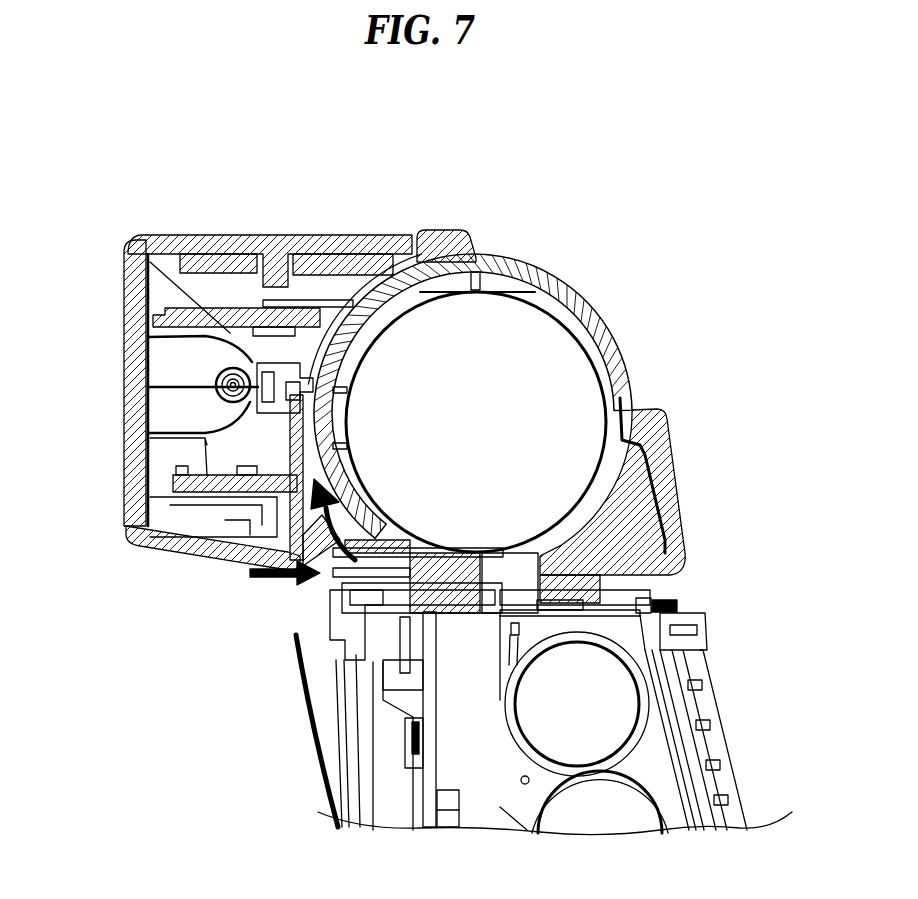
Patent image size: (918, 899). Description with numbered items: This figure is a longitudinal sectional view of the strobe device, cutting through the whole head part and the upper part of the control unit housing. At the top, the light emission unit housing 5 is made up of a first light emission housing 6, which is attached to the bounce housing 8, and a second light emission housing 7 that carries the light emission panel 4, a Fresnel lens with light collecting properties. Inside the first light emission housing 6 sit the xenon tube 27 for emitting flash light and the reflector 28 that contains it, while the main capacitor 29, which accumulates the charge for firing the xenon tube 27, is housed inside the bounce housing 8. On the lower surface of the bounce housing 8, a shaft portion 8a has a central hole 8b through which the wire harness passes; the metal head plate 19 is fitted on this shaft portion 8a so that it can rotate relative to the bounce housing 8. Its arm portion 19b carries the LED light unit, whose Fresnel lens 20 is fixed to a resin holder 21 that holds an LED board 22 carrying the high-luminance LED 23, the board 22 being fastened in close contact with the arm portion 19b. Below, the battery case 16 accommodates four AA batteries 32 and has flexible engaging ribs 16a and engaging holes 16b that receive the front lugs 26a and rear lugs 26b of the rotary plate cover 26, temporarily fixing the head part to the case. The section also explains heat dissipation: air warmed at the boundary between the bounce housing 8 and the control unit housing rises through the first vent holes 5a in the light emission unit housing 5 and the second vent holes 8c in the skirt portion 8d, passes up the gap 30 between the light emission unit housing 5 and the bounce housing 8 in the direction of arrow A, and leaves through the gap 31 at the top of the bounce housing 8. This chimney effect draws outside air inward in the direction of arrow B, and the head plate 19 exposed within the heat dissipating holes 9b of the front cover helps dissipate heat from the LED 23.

The light emission panel 4 is at (137, 292).
The light emission unit housing 5 is at (284, 237).
The first vent holes 5a is at (305, 442).
The first light emission housing 6 is at (441, 246).
The second light emission housing 7 is at (320, 245).
The bounce housing 8 is at (565, 310).
The shaft portion 8a is at (568, 575).
The hole 8b is at (556, 480).
The second vent holes 8c is at (372, 578).
The skirt portion 8d is at (285, 553).
The heat dissipating holes 9b is at (360, 595).
The battery case 16 is at (620, 630).
The engaging ribs 16a is at (520, 598).
The engaging holes 16b is at (648, 605).
The head plate 19 is at (352, 620).
The arm portion 19b is at (445, 636).
The Fresnel lens 20 is at (355, 680).
The resin holder 21 is at (380, 727).
The LED board 22 is at (440, 790).
The high-luminance LED 23 is at (418, 747).
The rotary plate cover 26 is at (688, 650).
The lugs 26a is at (515, 628).
The lugs 26b is at (663, 612).
The xenon tube 27 is at (233, 380).
The reflector 28 is at (183, 353).
The main capacitor 29 is at (483, 325).
The gap 30 is at (333, 540).
The gap 31 is at (476, 265).
The AA batteries 32 is at (600, 717).
The arrow A is at (352, 500).
The arrow B is at (273, 578).